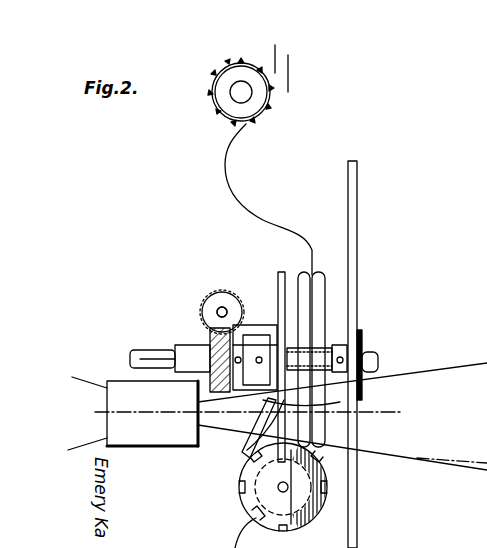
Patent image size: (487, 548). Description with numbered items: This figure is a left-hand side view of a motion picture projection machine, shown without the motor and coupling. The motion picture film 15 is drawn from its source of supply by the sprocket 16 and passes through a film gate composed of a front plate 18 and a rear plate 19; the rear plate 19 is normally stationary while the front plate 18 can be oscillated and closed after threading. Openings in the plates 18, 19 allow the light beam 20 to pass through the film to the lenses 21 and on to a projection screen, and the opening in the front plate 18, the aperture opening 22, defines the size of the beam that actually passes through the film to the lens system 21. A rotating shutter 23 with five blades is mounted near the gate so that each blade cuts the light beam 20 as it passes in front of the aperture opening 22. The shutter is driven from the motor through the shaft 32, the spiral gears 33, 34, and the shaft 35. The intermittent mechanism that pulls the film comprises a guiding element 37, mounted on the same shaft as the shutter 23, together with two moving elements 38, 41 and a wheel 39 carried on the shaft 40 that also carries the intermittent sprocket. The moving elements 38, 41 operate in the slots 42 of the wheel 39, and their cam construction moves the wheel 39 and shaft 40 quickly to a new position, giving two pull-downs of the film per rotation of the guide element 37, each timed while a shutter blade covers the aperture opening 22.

The motion picture film 15 is at (267, 221).
The sprocket 16 is at (227, 105).
The front plate 18 is at (320, 272).
The rear plate 19 is at (300, 272).
The light beam 20 is at (418, 458).
The lenses 21 is at (178, 448).
The aperture opening 22 is at (358, 404).
The rotating shutter 23 is at (357, 307).
The shaft 32 is at (222, 307).
The spiral gear 33 is at (213, 308).
The spiral gear 34 is at (210, 340).
The shaft 35 is at (157, 352).
The guiding element 37 is at (278, 279).
The moving element 38 is at (242, 452).
The wheel 39 is at (250, 508).
The shaft 40 is at (312, 492).
The moving element 41 is at (264, 325).
The slots 42 is at (238, 486).